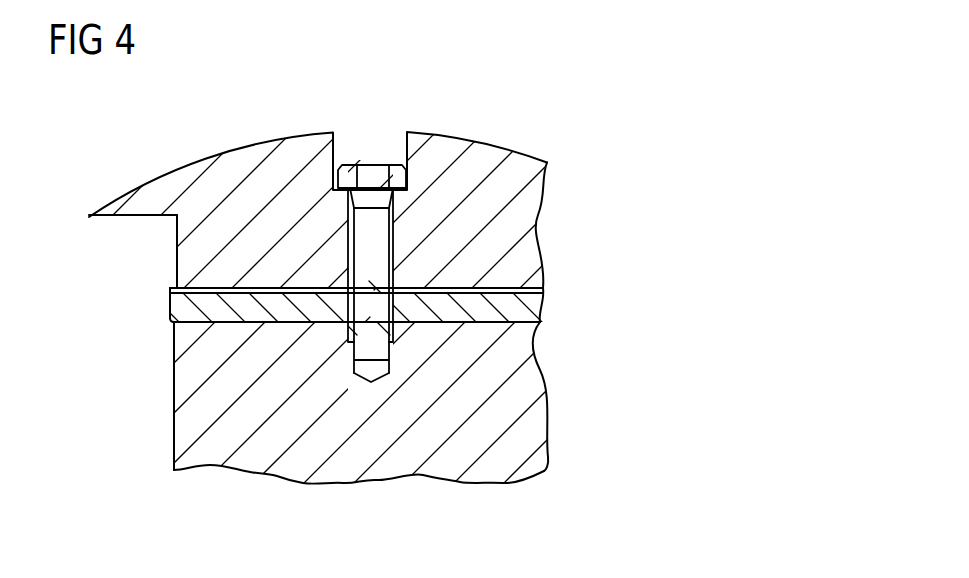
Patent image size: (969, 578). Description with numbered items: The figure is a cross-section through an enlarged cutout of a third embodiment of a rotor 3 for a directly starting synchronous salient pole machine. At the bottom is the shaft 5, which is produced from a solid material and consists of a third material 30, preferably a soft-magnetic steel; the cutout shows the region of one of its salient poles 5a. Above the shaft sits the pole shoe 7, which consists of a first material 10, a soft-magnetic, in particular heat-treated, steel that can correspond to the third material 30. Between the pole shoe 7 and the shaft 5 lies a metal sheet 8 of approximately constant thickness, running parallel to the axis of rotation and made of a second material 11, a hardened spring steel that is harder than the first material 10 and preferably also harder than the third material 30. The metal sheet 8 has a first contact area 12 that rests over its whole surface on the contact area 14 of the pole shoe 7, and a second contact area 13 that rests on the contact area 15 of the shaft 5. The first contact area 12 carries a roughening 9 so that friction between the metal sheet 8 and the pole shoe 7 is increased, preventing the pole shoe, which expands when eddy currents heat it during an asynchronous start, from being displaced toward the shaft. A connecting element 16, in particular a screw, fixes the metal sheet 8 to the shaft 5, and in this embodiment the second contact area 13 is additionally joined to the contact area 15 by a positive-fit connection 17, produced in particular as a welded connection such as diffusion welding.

The rotor 3 is at (549, 111).
The shaft 5 is at (335, 429).
The salient pole 5a is at (185, 438).
The pole shoe 7 is at (370, 189).
The metal sheet 8 is at (389, 301).
The roughening 9 is at (193, 287).
The first material 10 is at (227, 167).
The second material 11 is at (548, 304).
The first contact area 12 is at (172, 295).
The second contact area 13 is at (533, 313).
The contact area of the pole shoe 14 is at (217, 287).
The contact area of the shaft 15 is at (490, 325).
The connecting element 16 is at (372, 177).
The positive-fit connection 17 is at (230, 322).
The third material 30 is at (252, 458).